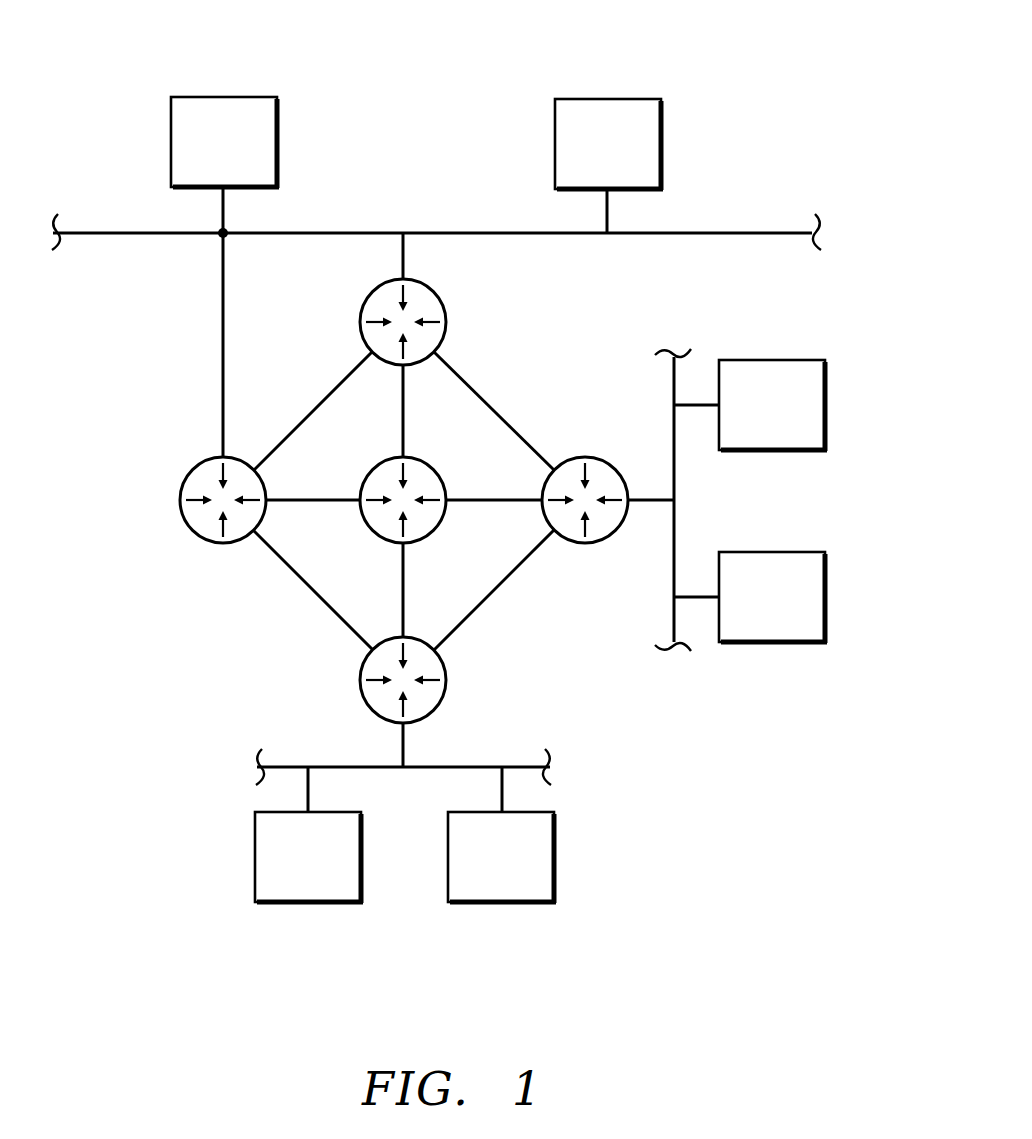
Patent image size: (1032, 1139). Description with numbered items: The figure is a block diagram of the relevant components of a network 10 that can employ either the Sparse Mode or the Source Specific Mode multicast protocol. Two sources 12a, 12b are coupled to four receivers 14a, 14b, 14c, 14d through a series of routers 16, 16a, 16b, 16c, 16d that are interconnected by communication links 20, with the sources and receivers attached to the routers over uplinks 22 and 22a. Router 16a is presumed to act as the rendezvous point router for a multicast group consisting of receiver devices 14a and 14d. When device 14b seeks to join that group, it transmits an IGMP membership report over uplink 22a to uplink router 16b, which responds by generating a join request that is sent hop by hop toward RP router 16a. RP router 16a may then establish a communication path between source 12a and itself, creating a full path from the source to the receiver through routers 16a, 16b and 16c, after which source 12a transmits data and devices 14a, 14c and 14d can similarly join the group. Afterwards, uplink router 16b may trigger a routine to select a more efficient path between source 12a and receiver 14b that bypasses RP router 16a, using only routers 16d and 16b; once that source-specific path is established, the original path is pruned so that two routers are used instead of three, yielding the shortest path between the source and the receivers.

The network 10 is at (820, 56).
The source 12a is at (203, 97).
The source 12b is at (585, 99).
The receiver 14a is at (290, 905).
The receiver 14b is at (508, 905).
The receiver 14c is at (827, 595).
The receiver 14d is at (827, 410).
The router 16 is at (591, 458).
The RP router 16a is at (384, 458).
The uplink router 16b is at (364, 688).
The router 16c is at (444, 300).
The router 16d is at (182, 497).
The communication links 20 is at (321, 393).
The uplink 22 is at (333, 233).
The uplink 22a is at (405, 735).